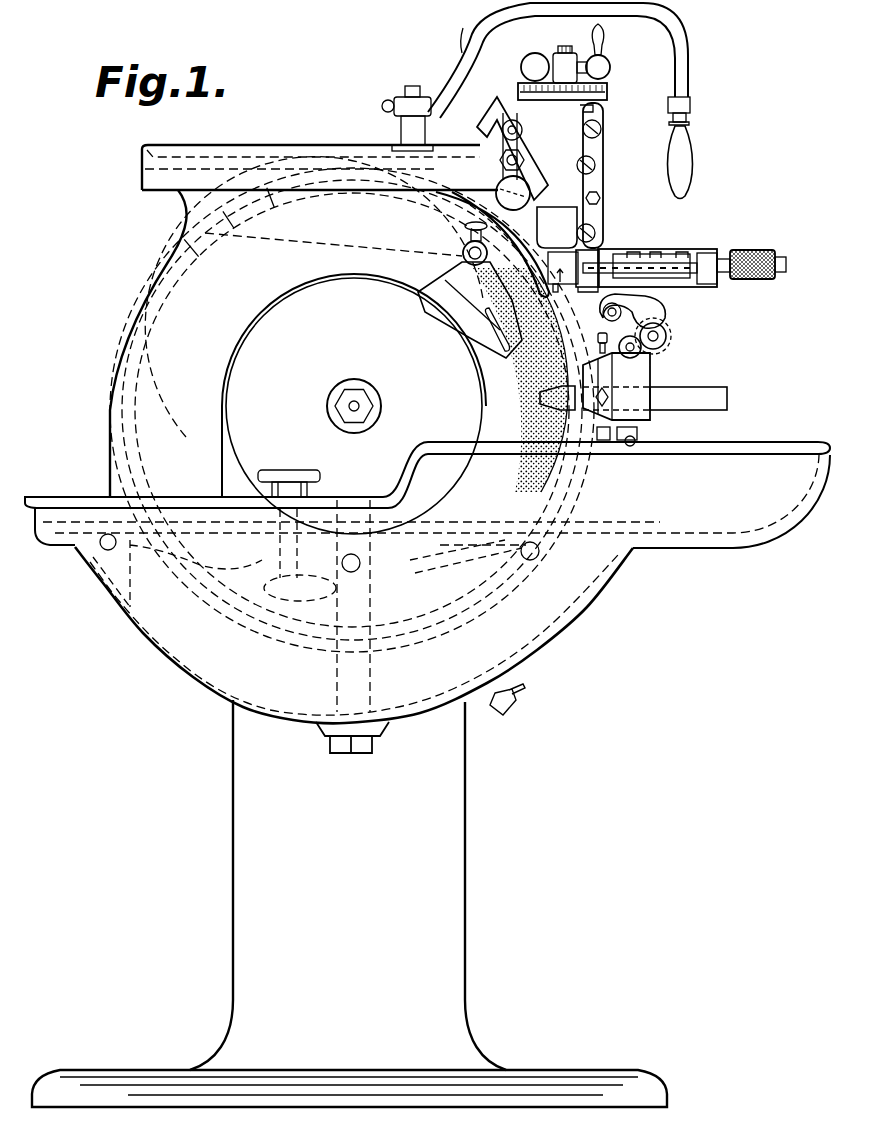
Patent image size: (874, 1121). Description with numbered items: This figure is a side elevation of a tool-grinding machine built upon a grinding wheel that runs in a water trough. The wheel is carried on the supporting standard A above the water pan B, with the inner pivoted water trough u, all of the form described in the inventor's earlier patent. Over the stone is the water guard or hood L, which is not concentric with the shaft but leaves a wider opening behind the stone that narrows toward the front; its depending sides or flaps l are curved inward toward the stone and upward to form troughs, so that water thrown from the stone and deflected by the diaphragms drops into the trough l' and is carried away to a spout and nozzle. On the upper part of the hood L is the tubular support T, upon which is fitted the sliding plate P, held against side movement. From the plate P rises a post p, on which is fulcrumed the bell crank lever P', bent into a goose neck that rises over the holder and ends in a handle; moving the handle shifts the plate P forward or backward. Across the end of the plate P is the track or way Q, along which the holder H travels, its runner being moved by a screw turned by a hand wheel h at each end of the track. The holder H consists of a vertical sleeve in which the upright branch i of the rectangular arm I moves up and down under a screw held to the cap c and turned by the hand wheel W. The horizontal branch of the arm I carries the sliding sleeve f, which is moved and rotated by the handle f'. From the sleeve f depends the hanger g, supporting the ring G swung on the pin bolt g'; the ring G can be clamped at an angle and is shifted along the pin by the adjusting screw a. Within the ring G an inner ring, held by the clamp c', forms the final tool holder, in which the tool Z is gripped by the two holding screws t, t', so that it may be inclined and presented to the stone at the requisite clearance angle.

The supporting standard A is at (349, 903).
The water pan B is at (354, 460).
The inner pivoted water trough u is at (244, 618).
The tubular support T is at (189, 186).
The sliding plate P is at (320, 156).
The post p is at (431, 136).
The bell crank lever P' is at (559, 59).
The hand wheel W is at (604, 62).
The cap c is at (577, 87).
The holder H is at (580, 188).
The hand wheel h is at (517, 198).
The track or way Q is at (530, 175).
The depending sides or flaps l is at (385, 345).
The water guard or hood L is at (445, 268).
The trough l' is at (314, 297).
The upright branch i is at (555, 269).
The rectangular arm I is at (580, 280).
The sleeve f is at (650, 254).
The handle f' is at (751, 250).
The hanger g is at (645, 310).
The adjusting screw a is at (668, 336).
The pin bolt g' is at (652, 354).
The ring G is at (616, 376).
The tool Z is at (691, 398).
The holding screw t is at (559, 368).
The holding screw t' is at (603, 433).
The clamp c' is at (652, 433).